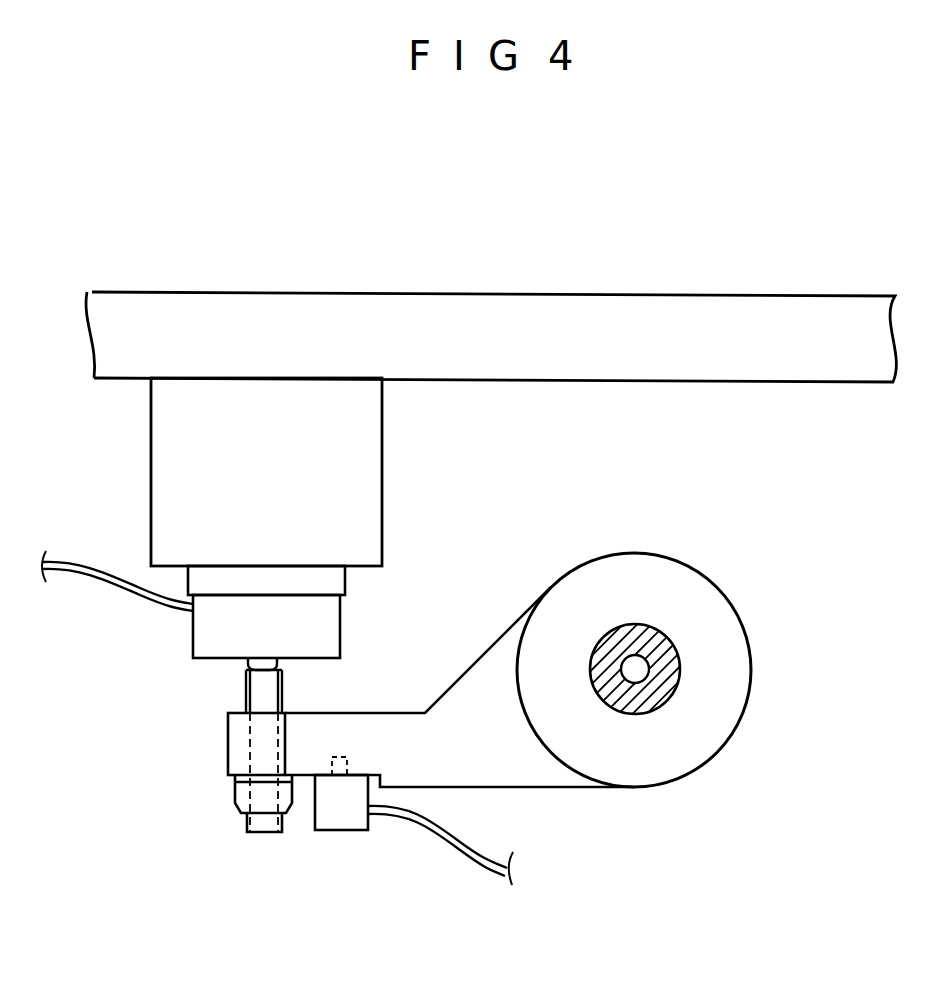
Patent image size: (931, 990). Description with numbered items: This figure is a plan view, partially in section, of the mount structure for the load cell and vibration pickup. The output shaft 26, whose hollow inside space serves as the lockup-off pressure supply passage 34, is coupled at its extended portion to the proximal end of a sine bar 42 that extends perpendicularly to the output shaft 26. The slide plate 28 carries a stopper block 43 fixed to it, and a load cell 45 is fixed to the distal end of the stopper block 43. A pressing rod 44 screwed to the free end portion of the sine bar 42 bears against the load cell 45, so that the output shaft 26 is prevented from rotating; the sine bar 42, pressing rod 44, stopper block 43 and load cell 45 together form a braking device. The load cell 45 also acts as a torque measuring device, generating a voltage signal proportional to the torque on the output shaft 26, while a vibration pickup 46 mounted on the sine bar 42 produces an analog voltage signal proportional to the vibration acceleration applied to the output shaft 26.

The slide plate 28 is at (529, 327).
The stopper block 43 is at (350, 458).
The load cell 45 is at (192, 627).
The pressing rod 44 is at (265, 690).
The sine bar 42 is at (567, 788).
The vibration pickup 46 is at (342, 832).
The output shaft 26 is at (673, 640).
The lockup-off pressure supply passage 34 is at (633, 672).